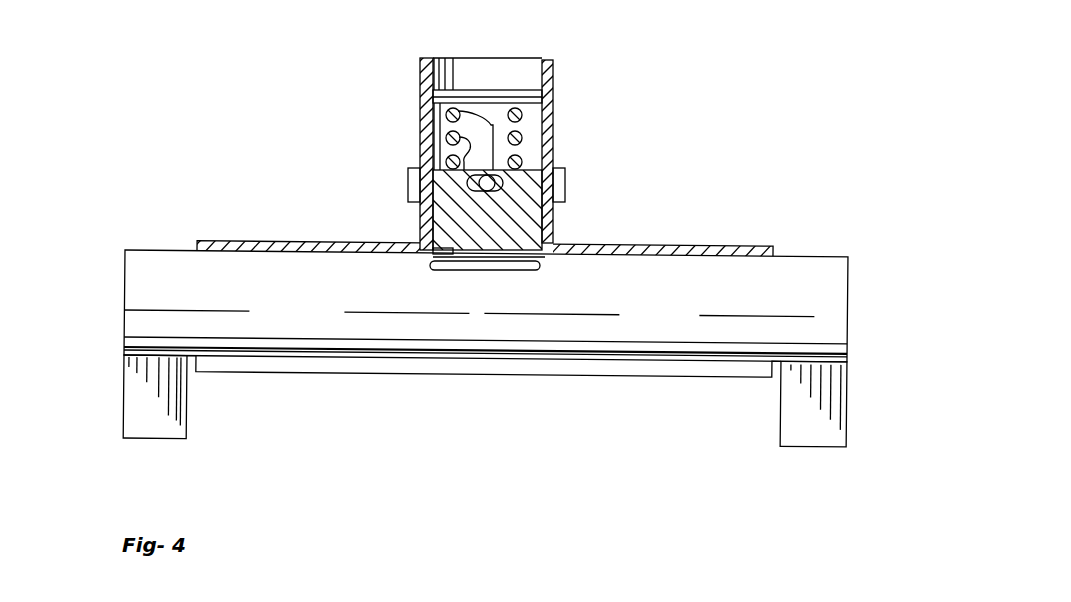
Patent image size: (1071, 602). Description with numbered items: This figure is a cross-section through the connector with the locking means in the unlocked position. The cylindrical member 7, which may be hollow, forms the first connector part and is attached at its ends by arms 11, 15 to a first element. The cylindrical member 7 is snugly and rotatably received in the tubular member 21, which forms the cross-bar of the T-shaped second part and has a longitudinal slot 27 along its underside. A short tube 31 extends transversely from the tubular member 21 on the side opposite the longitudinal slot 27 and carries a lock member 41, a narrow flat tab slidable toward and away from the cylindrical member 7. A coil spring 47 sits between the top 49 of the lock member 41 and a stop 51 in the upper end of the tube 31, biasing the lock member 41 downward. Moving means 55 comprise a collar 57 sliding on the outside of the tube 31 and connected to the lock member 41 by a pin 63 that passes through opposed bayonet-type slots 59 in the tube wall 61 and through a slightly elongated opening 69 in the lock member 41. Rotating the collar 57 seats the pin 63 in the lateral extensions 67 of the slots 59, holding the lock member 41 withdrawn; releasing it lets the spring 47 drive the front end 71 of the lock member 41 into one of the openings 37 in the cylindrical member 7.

The cylindrical member 7 is at (820, 262).
The arm 11 is at (826, 438).
The arm 15 is at (135, 412).
The tubular member 21 is at (775, 247).
The longitudinal slot 27 is at (295, 372).
The tube 31 is at (553, 86).
The openings 37 is at (475, 262).
The lock member 41 is at (445, 206).
The coil spring 47 is at (525, 140).
The top of the lock member 49 is at (545, 153).
The stop 51 is at (437, 96).
The moving means 55 is at (570, 172).
The collar 57 is at (416, 183).
The bayonet-type slots 59 is at (522, 118).
The tube wall 61 is at (538, 62).
The pin 63 is at (542, 184).
The lateral extensions 67 is at (455, 111).
The opening 69 is at (478, 183).
The front end 71 is at (512, 262).